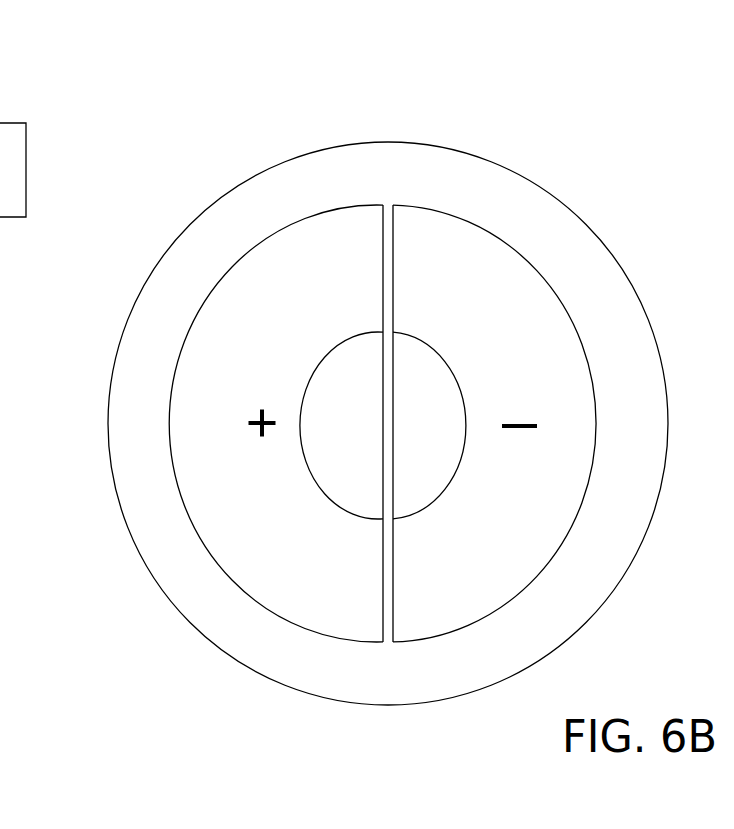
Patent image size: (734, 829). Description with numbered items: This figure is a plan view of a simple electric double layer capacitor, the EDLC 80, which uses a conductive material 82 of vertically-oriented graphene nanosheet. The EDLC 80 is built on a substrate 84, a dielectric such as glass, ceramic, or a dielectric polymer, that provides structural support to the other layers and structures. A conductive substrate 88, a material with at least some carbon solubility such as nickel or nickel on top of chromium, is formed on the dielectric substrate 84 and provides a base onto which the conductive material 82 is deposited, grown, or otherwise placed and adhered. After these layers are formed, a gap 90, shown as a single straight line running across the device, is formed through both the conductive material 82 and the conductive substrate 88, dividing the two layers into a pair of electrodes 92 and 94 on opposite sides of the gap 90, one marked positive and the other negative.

The EDLC 80 is at (278, 113).
The conductive material 82 is at (463, 367).
The substrate 84 is at (110, 392).
The conductive substrate 88 is at (13, 128).
The gap 90 is at (385, 239).
The electrode 92 is at (222, 457).
The electrode 94 is at (537, 489).